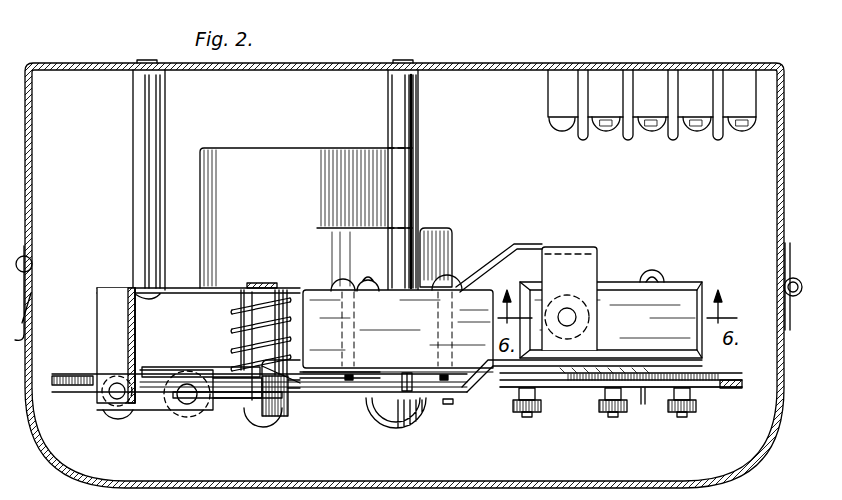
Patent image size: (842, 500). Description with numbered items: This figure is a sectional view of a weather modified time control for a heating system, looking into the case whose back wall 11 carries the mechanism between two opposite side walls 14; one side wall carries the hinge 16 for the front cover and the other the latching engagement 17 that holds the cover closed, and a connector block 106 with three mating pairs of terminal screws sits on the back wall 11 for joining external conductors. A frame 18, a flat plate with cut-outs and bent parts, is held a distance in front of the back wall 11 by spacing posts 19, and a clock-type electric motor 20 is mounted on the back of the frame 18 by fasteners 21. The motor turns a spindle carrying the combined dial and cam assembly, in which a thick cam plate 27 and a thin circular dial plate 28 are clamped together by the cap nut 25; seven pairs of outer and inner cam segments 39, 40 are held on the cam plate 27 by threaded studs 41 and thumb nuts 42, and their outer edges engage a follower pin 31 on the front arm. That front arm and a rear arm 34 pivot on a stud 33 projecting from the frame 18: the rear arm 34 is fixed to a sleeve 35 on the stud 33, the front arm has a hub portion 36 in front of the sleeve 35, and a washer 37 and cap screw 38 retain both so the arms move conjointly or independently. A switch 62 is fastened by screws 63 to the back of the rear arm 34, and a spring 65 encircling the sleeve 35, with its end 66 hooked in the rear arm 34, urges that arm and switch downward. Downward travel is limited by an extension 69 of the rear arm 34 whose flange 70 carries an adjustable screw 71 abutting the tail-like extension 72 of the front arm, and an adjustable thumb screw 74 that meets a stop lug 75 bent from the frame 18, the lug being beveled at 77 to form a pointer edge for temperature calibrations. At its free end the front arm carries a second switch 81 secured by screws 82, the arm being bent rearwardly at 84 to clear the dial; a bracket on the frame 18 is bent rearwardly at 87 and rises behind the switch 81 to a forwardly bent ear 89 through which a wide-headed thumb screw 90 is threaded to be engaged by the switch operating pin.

The back wall 11 is at (333, 70).
The side walls 14 is at (33, 147).
The hinge 16 is at (787, 276).
The latching engagement 17 is at (33, 294).
The frame 18 is at (178, 293).
The spacing posts 19 is at (133, 176).
The electric motor 20 is at (231, 158).
The fasteners 21 is at (368, 279).
The cap nut 25 is at (392, 423).
The cam plate 27 is at (714, 373).
The dial plate 28 is at (656, 395).
The follower pin 31 is at (415, 381).
The stud 33 is at (234, 356).
The rear arm 34 is at (371, 373).
The sleeve 35 is at (232, 338).
The hub portion 36 is at (245, 390).
The washer 37 is at (281, 409).
The cap screw 38 is at (255, 418).
The outer cam segment 39 is at (729, 388).
The inner cam segment 40 is at (741, 384).
The threaded studs 41 is at (617, 409).
The thumb nut 42 is at (547, 407).
The switch 62 is at (470, 300).
The screws 63 is at (340, 285).
The spring 65 is at (234, 329).
The spring end 66 is at (283, 394).
The extension 69 is at (170, 372).
The flange 70 is at (97, 409).
The adjustable screw 71 is at (186, 406).
The tail-like extension 72 is at (207, 399).
The adjustable thumb screw 74 is at (113, 411).
The stop lug 75 is at (97, 338).
The bevel 77 is at (137, 348).
The switch 81 is at (676, 298).
The screws 82 is at (651, 273).
The rearward bend 84 is at (506, 383).
The rearward bend 87 is at (491, 265).
The forwardly bent ear 89 is at (583, 270).
The thumb screw 90 is at (573, 318).
The connector block 106 is at (668, 130).